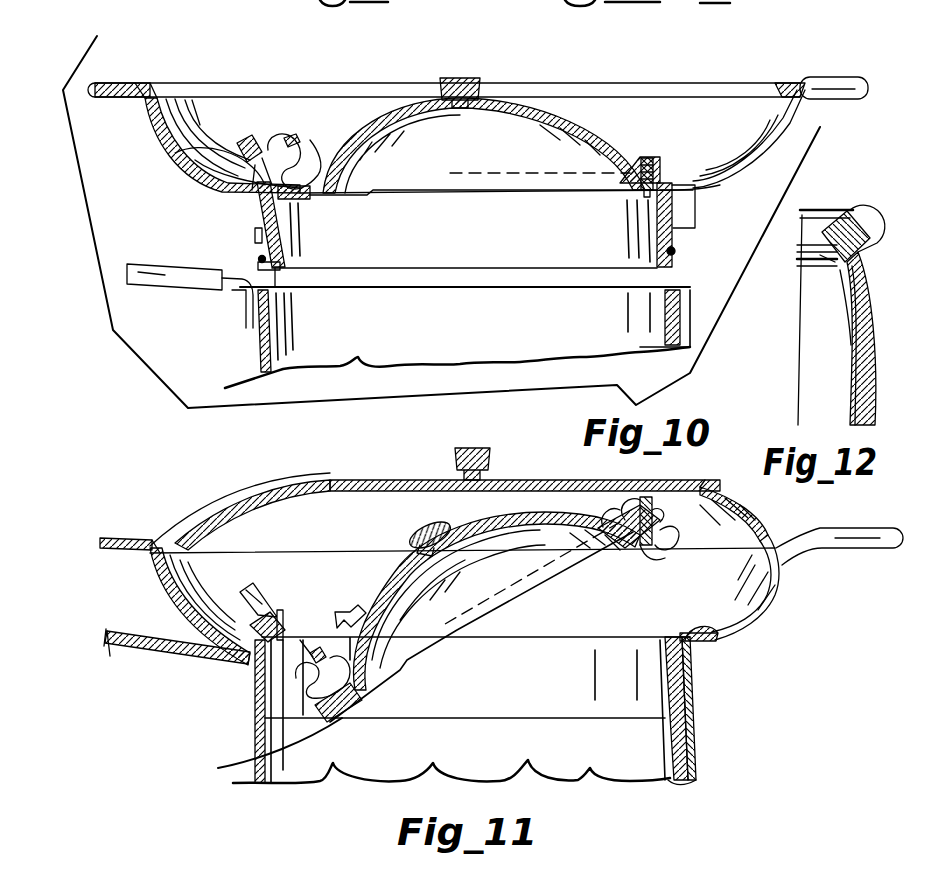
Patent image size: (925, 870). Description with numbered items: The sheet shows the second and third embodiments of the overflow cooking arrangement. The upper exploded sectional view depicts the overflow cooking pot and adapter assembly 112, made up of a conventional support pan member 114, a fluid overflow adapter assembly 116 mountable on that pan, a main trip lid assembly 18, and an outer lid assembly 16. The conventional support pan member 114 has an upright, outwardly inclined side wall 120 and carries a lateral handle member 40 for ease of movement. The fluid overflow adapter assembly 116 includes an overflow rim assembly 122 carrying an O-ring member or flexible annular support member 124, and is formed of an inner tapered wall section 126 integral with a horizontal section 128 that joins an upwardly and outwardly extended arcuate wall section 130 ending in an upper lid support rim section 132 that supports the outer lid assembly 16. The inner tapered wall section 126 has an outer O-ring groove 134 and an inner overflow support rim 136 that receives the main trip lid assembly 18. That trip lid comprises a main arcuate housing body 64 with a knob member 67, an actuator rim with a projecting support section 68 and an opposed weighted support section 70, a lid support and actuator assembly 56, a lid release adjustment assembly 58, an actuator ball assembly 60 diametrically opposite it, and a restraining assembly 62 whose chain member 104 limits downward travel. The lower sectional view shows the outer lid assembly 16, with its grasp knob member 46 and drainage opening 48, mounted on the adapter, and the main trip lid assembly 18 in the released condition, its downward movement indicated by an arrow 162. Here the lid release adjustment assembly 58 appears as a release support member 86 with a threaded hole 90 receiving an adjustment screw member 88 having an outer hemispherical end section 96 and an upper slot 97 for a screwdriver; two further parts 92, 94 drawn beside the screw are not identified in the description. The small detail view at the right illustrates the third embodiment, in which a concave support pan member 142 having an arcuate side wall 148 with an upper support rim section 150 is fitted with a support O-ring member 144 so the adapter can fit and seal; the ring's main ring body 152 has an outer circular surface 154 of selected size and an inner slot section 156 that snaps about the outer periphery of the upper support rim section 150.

In FIG. 11, the outer lid assembly 16 is at (372, 479).
In FIG. 10, the main trip lid assembly 18 is at (540, 98).
In FIG. 11, the main trip lid assembly 18 is at (476, 530).
In FIG. 10, the lateral handle member 40 is at (133, 283).
In FIG. 11, the grasp knob member 46 is at (455, 450).
In FIG. 11, the drainage opening 48 is at (205, 505).
In FIG. 10, the lid support and actuator assembly 56 is at (247, 140).
In FIG. 11, the lid support and actuator assembly 56 is at (236, 603).
In FIG. 10, the lid release adjustment assembly 58 is at (633, 153).
In FIG. 11, the lid release adjustment assembly 58 is at (630, 540).
In FIG. 10, the actuator ball assembly 60 is at (313, 135).
In FIG. 11, the actuator ball assembly 60 is at (247, 693).
In FIG. 11, the restraining assembly 62 is at (243, 670).
In FIG. 11, the main arcuate housing body 64 is at (355, 605).
In FIG. 10, the knob member 67 is at (450, 72).
In FIG. 11, the knob member 67 is at (412, 532).
In FIG. 10, the projecting support section 68 is at (576, 186).
In FIG. 11, the projecting support section 68 is at (538, 600).
In FIG. 10, the weighted support section 70 is at (300, 207).
In FIG. 11, the weighted support section 70 is at (293, 737).
In FIG. 11, the release support member 86 is at (603, 525).
In FIG. 11, the adjustment screw member 88 is at (650, 508).
In FIG. 11, the threaded hole 90 is at (667, 512).
In FIG. 11, the rim 92 is at (703, 491).
In FIG. 11, the hinge spring arm 94 is at (628, 520).
In FIG. 11, the outer hemispherical end section 96 is at (650, 545).
In FIG. 10, the upper slot 97 is at (652, 156).
In FIG. 11, the upper slot 97 is at (642, 505).
In FIG. 11, the chain member 104 is at (177, 667).
In FIG. 10, the overflow cooking pot and adapter assembly 112 is at (165, 206).
In FIG. 10, the conventional support pan member 114 is at (243, 326).
In FIG. 11, the conventional support pan member 114 is at (686, 743).
In FIG. 10, the fluid overflow adapter assembly 116 is at (145, 128).
In FIG. 11, the fluid overflow adapter assembly 116 is at (758, 617).
In FIG. 11, the side wall 120 is at (683, 763).
In FIG. 10, the overflow rim assembly 122 is at (746, 80).
In FIG. 10, the O-ring member 124 is at (260, 259).
In FIG. 11, the O-ring member 124 is at (683, 695).
In FIG. 10, the inner tapered wall section 126 is at (256, 234).
In FIG. 10, the horizontal section 128 is at (225, 151).
In FIG. 11, the horizontal section 128 is at (720, 641).
In FIG. 10, the arcuate wall section 130 is at (195, 180).
In FIG. 11, the arcuate wall section 130 is at (153, 574).
In FIG. 10, the upper lid support rim section 132 is at (178, 50).
In FIG. 11, the upper lid support rim section 132 is at (147, 543).
In FIG. 10, the outer O-ring groove 134 is at (697, 226).
In FIG. 10, the inner overflow support rim 136 is at (682, 178).
In FIG. 12, the concave support pan member 142 is at (848, 300).
In FIG. 12, the support O-ring member 144 is at (843, 328).
In FIG. 12, the arcuate side wall 148 is at (848, 392).
In FIG. 12, the upper support rim section 150 is at (860, 222).
In FIG. 12, the main ring body 152 is at (835, 210).
In FIG. 12, the outer circular surface 154 is at (830, 236).
In FIG. 12, the inner slot section 156 is at (852, 258).
In FIG. 11, the arrow 162 is at (262, 488).